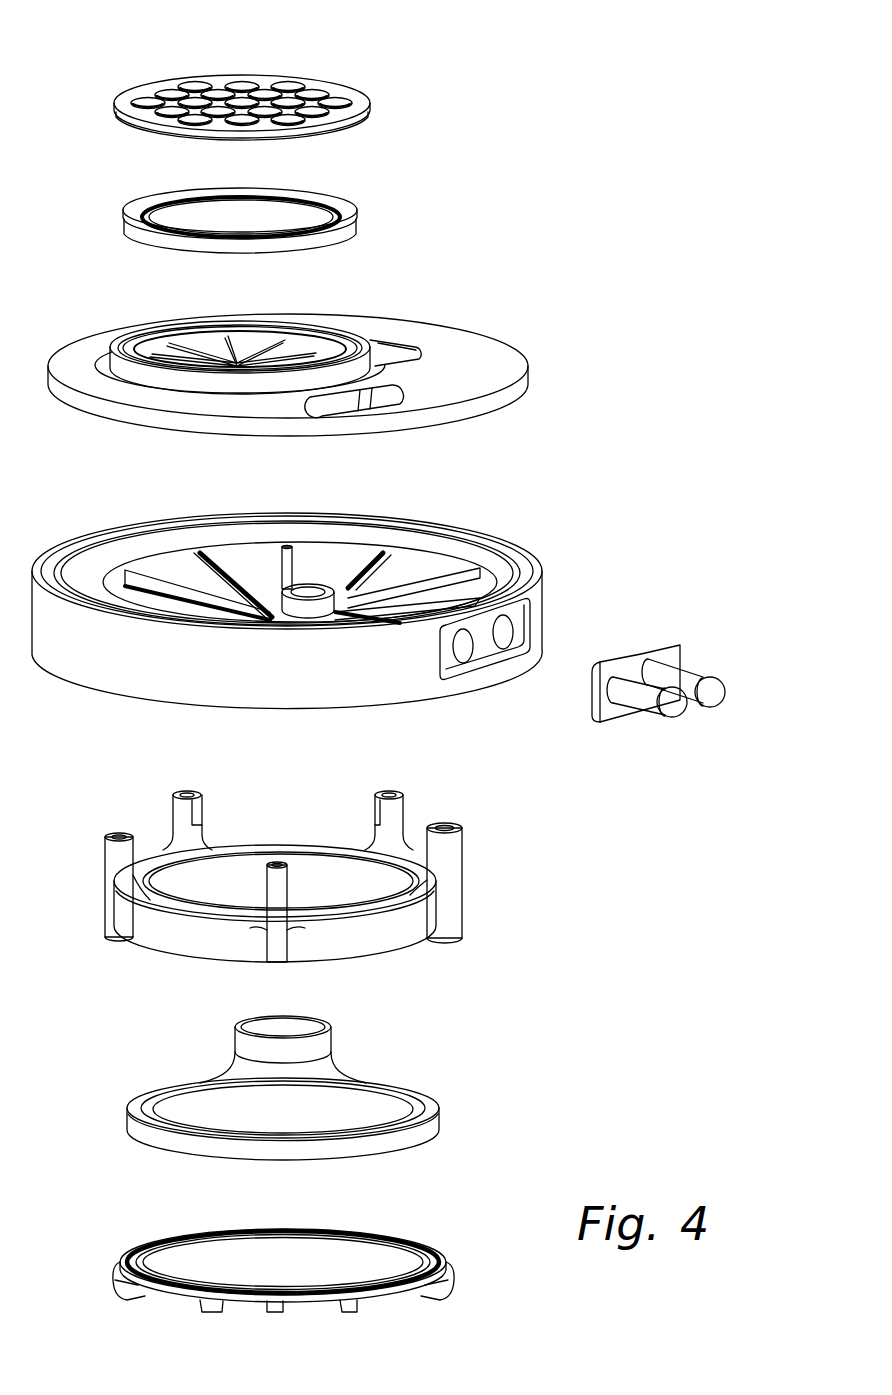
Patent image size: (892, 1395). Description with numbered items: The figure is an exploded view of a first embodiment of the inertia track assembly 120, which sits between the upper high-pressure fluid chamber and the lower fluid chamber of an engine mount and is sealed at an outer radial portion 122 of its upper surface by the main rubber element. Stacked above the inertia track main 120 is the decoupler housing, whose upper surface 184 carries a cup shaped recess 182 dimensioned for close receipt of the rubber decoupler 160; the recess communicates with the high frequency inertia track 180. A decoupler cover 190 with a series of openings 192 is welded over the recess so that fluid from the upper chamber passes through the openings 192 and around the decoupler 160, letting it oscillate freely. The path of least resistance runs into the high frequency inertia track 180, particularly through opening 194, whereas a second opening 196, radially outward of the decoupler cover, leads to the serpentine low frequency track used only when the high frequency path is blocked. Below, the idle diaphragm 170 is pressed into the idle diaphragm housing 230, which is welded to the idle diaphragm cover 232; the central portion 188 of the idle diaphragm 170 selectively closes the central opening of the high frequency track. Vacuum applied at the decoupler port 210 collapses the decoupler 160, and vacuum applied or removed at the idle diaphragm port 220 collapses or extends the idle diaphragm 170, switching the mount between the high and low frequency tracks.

The inertia track assembly 120 is at (327, 588).
The outer radial portion of upper surface 122 is at (327, 364).
The decoupler 160 is at (356, 210).
The idle diaphragm 170 is at (310, 1073).
The high frequency inertia track 180 is at (333, 563).
The cup shaped recess 182 is at (253, 327).
The upper surface of housing 184 is at (462, 349).
The central portion of idle diaphragm 188 is at (230, 1040).
The decoupler cover 190 is at (293, 89).
The openings 192 is at (290, 86).
The opening 194 is at (387, 345).
The opening 196 is at (387, 392).
The decoupler port 210 is at (637, 703).
The idle diaphragm port 220 is at (669, 692).
The idle diaphragm housing 230 is at (462, 888).
The idle diaphragm cover 232 is at (155, 1242).